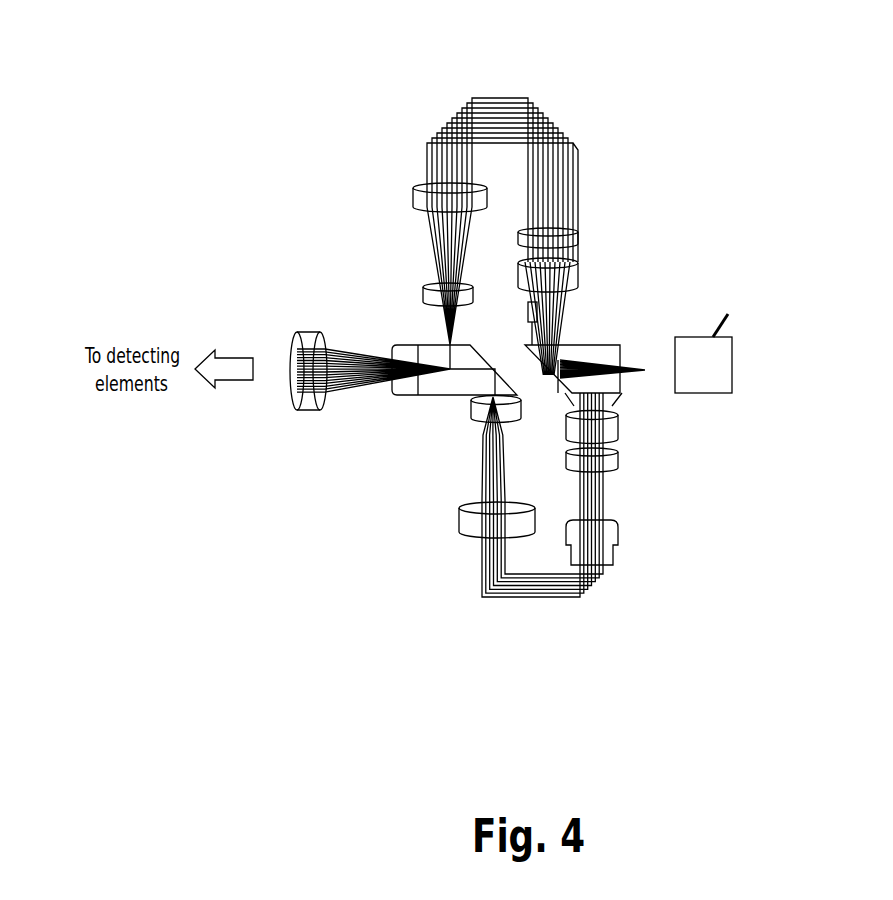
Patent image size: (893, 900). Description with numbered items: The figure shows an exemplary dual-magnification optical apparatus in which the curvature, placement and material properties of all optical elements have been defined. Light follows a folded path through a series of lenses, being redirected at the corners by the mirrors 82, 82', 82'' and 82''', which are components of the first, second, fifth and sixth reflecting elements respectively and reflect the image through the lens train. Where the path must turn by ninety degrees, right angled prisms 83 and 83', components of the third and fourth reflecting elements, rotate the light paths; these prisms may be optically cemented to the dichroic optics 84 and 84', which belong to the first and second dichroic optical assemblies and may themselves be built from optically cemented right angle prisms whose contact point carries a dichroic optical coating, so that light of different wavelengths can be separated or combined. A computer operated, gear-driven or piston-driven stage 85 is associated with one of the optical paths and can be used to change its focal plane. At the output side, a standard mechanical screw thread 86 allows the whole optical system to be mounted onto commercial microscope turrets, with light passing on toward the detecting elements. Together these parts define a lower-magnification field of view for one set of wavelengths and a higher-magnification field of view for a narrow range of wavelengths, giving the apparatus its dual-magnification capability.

The mirror 82 is at (457, 129).
The mirror 82' is at (545, 157).
The mirror 82'' is at (501, 528).
The mirror 82''' is at (587, 526).
The right angled prism 83 is at (463, 394).
The right angled prism 83' is at (563, 318).
The dichroic optic 84 is at (453, 301).
The dichroic optic 84' is at (593, 333).
The stage 85 is at (650, 525).
The mechanical screw thread 86 is at (350, 326).